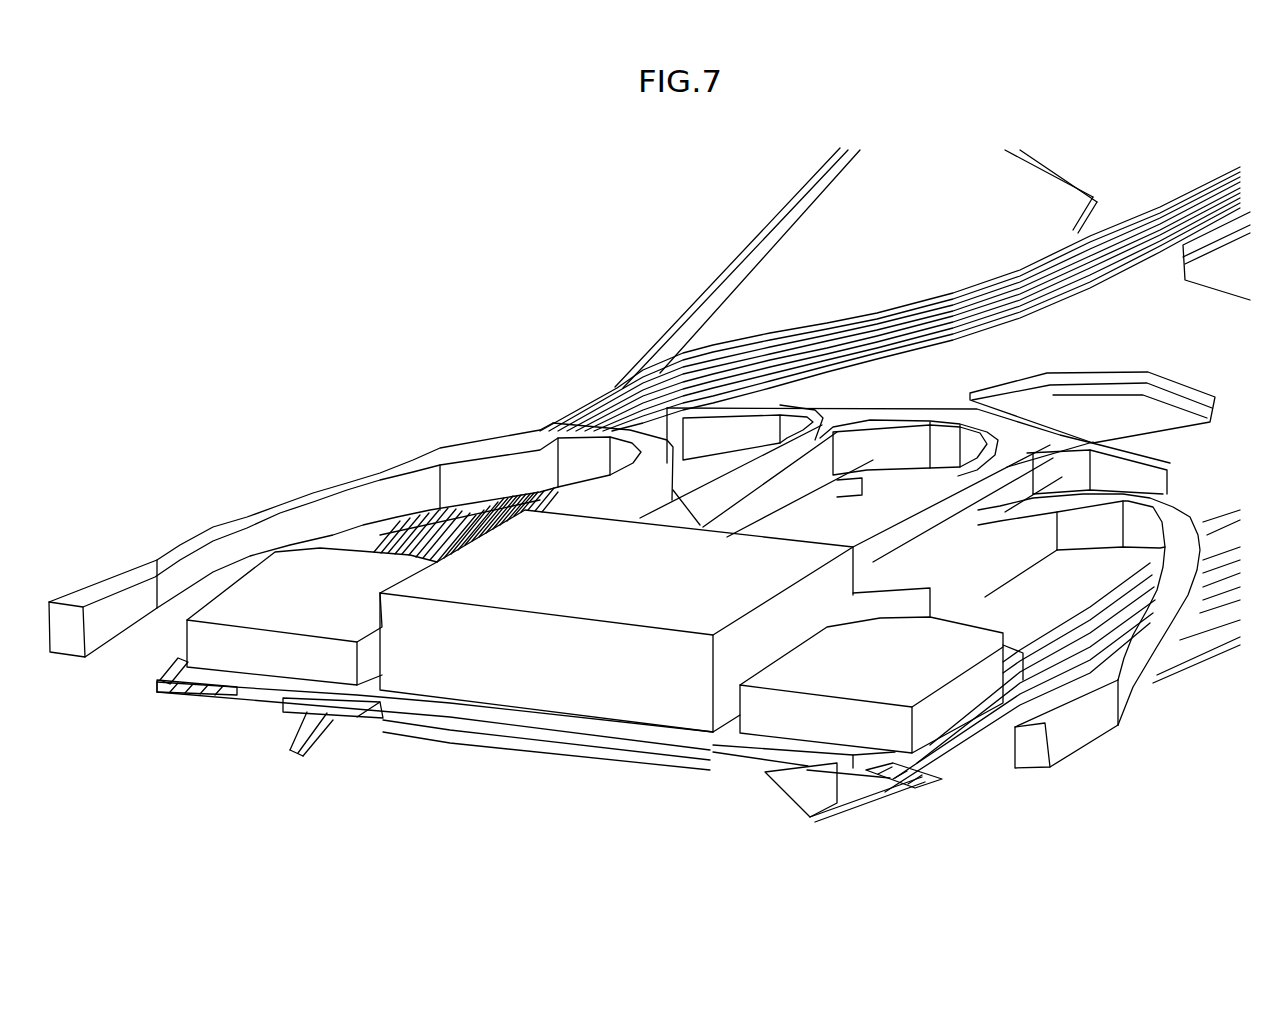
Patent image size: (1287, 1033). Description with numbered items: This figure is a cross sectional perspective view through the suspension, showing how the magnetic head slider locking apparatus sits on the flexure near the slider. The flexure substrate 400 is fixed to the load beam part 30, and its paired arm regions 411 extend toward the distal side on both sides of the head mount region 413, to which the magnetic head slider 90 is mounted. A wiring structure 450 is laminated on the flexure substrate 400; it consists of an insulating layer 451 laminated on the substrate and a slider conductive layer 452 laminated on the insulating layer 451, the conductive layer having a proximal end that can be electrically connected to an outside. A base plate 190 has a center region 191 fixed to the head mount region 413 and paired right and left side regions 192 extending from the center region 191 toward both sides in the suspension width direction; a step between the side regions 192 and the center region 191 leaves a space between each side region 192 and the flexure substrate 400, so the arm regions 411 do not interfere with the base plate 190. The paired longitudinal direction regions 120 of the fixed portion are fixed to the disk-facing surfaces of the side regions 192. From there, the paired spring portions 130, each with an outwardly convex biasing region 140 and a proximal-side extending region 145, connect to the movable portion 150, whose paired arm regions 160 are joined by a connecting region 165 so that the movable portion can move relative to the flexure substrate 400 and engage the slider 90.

The load beam part 30 is at (526, 762).
The magnetic head slider 90 is at (611, 580).
The longitudinal direction regions 120 is at (312, 610).
The spring portions 130 is at (624, 609).
The biasing region 140 is at (624, 628).
The proximal-side extending region 145 is at (826, 507).
The movable portion 150 is at (892, 380).
The arm regions 160 is at (775, 510).
The connecting region 165 is at (917, 435).
The base plate 190 is at (456, 799).
The center region 191 is at (528, 775).
The side regions 192 is at (521, 793).
The flexure substrate 400 is at (1118, 352).
The arm regions 411 is at (581, 788).
The head mount region 413 is at (587, 802).
The wiring structure 450 is at (526, 781).
The insulating layer 451 is at (526, 765).
The slider conductive layer 452 is at (538, 776).